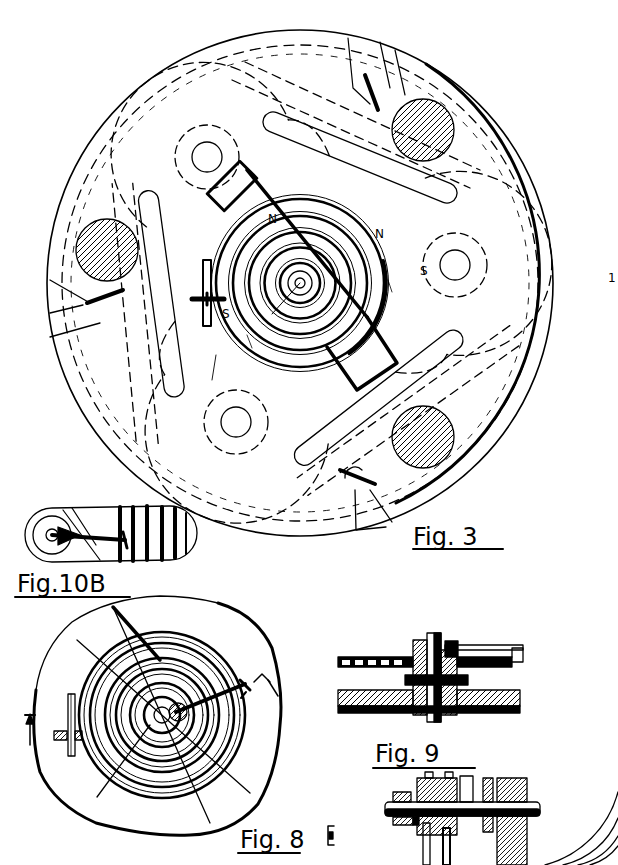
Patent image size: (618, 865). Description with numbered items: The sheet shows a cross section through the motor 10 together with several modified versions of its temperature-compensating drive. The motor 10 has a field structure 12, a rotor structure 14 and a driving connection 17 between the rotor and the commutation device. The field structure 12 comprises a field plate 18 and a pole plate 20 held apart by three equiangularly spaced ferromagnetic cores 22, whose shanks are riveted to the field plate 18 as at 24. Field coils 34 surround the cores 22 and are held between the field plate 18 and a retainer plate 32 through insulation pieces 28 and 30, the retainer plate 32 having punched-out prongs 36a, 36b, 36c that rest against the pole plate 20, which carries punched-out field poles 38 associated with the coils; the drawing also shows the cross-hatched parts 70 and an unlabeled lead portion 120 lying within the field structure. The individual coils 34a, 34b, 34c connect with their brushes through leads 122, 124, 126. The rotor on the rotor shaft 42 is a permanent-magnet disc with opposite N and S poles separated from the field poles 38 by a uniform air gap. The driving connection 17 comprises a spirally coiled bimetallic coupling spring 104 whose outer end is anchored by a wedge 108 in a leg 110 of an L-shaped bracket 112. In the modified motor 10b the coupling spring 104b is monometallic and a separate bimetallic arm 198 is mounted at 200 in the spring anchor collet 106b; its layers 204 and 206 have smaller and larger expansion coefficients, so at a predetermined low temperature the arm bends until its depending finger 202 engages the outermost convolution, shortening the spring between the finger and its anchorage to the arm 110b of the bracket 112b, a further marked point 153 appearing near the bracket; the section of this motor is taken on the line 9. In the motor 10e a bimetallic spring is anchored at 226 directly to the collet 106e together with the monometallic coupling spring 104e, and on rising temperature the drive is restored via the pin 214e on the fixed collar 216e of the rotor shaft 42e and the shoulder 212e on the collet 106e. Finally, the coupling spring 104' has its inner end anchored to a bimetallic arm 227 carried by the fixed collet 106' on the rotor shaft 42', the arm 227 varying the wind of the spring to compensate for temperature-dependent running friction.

In FIG. 3, the motor 10 is at (500, 114).
In FIG. 3, the field structure 12 is at (529, 161).
In FIG. 3, the rotor structure 14 is at (387, 92).
In FIG. 3, the driving connection 17 is at (223, 332).
In FIG. 3, the field plate 18 is at (516, 415).
In FIG. 3, the pole plate 20 is at (470, 350).
In FIG. 3, the ferromagnetic core 22 is at (176, 163).
In FIG. 3, the rivet connection 24 is at (206, 150).
In FIG. 3, the insulation piece 28 is at (365, 520).
In FIG. 3, the insulation piece 30 is at (505, 345).
In FIG. 3, the retainer plate 32 is at (333, 495).
In FIG. 3, the field coil 34 is at (281, 100).
In FIG. 3, the field coil 34a is at (268, 90).
In FIG. 3, the field coil 34b is at (535, 335).
In FIG. 3, the field coil 34c is at (283, 510).
In FIG. 3, the prong 36a is at (227, 203).
In FIG. 3, the prong 36b is at (399, 290).
In FIG. 3, the prong 36c is at (249, 347).
In FIG. 3, the field pole 38 is at (278, 197).
In FIG. 3, the rotor shaft 42 is at (293, 292).
In FIG. 3, the magnet 70 is at (423, 100).
In FIG. 3, the coupling spring 104 is at (323, 280).
In FIG. 3, the wedge 108 is at (203, 297).
In FIG. 3, the leg 110 is at (207, 312).
In FIG. 3, the L-shaped bracket 112 is at (194, 300).
In FIG. 3, the lead 120 is at (348, 375).
In FIG. 3, the lead 122 is at (363, 105).
In FIG. 3, the lead 124 is at (352, 468).
In FIG. 3, the lead 126 is at (105, 310).
In FIG. 3, the section line 9 is at (402, 346).
In FIG. 8, the section line 9 is at (155, 719).
In FIG. 10B, the coupling spring 104' is at (128, 534).
In FIG. 10B, the rotor shaft 42' is at (42, 527).
In FIG. 10B, the collet 106' is at (70, 522).
In FIG. 10B, the bimetallic arm 227 is at (102, 537).
In FIG. 8, the motor 10b is at (247, 631).
In FIG. 9, the motor 10b is at (464, 628).
In FIG. 8, the coupling spring 104b is at (205, 642).
In FIG. 9, the coupling spring 104b is at (358, 658).
In FIG. 8, the spring anchor collet 106b is at (140, 770).
In FIG. 9, the spring anchor collet 106b is at (420, 640).
In FIG. 8, the arm 110b is at (66, 730).
In FIG. 8, the bracket 112b is at (58, 738).
In FIG. 8, the pin 153 is at (244, 680).
In FIG. 8, the mounting 200 is at (190, 702).
In FIG. 9, the mounting 200 is at (452, 640).
In FIG. 8, the bimetal layer 204 is at (240, 680).
In FIG. 8, the bimetal layer 206 is at (247, 692).
In FIG. 9, the bimetallic arm 198 is at (489, 648).
In FIG. 9, the depending finger 202 is at (516, 664).
In FIG. 10A, the motor 10e is at (502, 778).
In FIG. 10A, the rotor shaft 42e is at (522, 808).
In FIG. 10A, the coupling spring 104e is at (424, 850).
In FIG. 10A, the collet 106e is at (420, 796).
In FIG. 10A, the shoulder 212e is at (416, 826).
In FIG. 10A, the pin 214e is at (400, 824).
In FIG. 10A, the fixed collar 216e is at (393, 796).
In FIG. 10A, the anchorage 226 is at (450, 832).